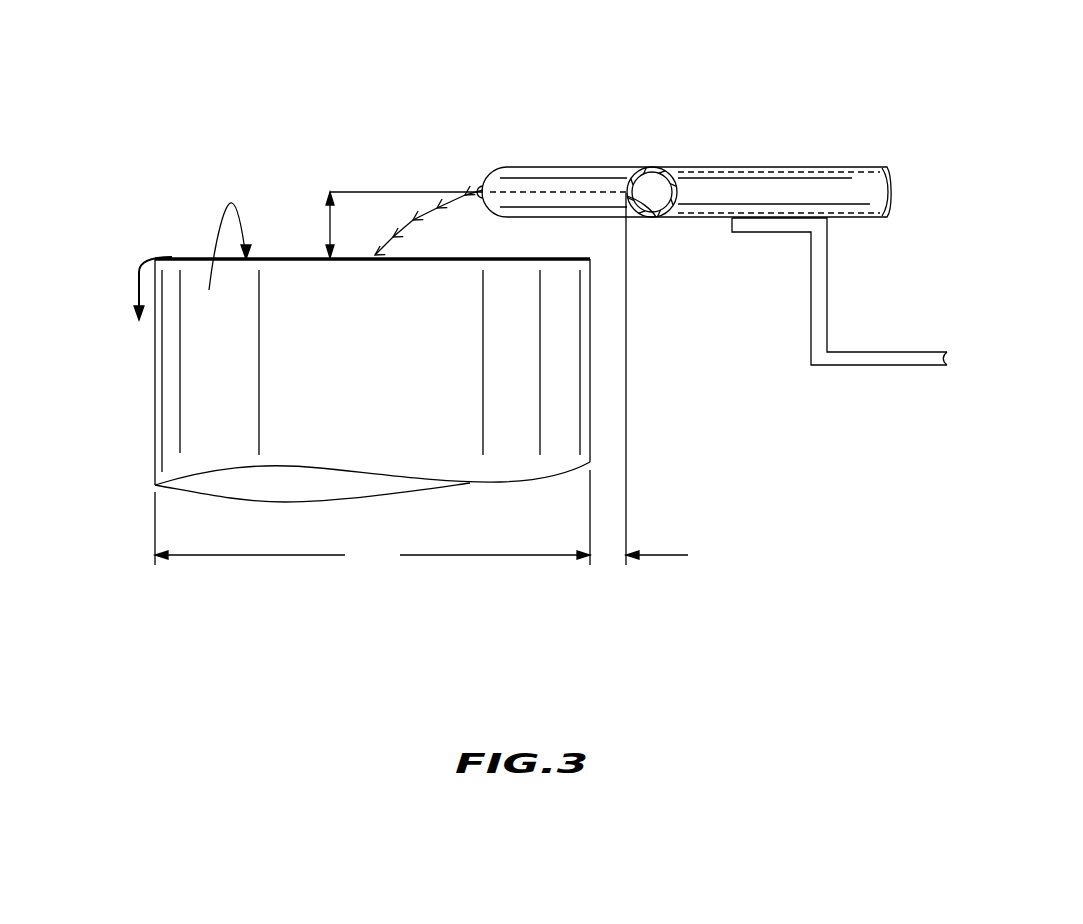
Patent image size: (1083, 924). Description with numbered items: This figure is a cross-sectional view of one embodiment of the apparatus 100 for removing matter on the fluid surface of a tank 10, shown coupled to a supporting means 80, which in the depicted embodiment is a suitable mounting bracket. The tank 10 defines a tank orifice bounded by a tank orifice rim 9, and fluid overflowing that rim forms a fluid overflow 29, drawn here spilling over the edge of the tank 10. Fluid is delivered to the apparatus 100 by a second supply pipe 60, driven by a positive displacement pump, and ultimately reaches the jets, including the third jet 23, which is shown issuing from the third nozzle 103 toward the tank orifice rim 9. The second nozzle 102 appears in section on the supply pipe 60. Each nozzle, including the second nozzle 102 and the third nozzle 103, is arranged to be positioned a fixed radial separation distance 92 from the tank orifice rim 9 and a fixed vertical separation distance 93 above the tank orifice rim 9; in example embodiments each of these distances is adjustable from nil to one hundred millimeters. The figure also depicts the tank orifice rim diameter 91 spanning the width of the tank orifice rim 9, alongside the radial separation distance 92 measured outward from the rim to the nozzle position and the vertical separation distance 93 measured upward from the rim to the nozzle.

The tank orifice rim 9 is at (225, 264).
The tank 10 is at (472, 440).
The third jet 23 is at (425, 213).
The fluid overflow 29 is at (138, 270).
The second supply pipe 60 is at (852, 166).
The supporting means 80 is at (880, 358).
The tank orifice rim diameter 91 is at (372, 521).
The fixed radial separation distance 92 is at (676, 383).
The fixed vertical separation distance 93 is at (399, 225).
The apparatus 100 is at (626, 125).
The second nozzle 102 is at (655, 215).
The third nozzle 103 is at (483, 190).